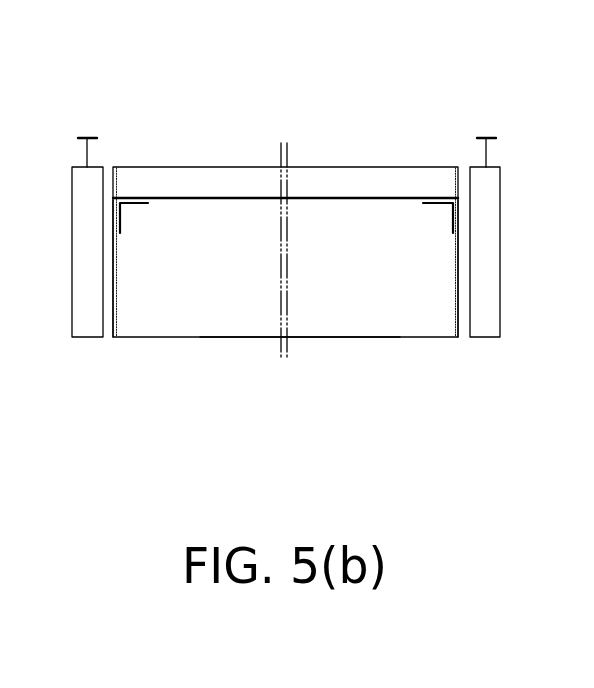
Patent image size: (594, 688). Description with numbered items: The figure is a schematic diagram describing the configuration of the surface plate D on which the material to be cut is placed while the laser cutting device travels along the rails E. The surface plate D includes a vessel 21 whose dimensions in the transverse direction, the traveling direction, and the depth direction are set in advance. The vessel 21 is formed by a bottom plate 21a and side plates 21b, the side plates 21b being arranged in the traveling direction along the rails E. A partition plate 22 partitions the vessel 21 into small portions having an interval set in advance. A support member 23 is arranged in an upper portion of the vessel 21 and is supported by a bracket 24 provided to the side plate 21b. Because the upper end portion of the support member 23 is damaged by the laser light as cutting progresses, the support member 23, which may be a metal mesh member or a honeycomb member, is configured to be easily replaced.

The vessel 21 is at (390, 287).
The bottom plate 21a is at (317, 337).
The side plate 21b is at (115, 298).
The partition plate 22 is at (442, 272).
The support member 23 is at (360, 182).
The bracket 24 is at (142, 203).
The rails E is at (87, 136).
The surface plate D is at (223, 355).